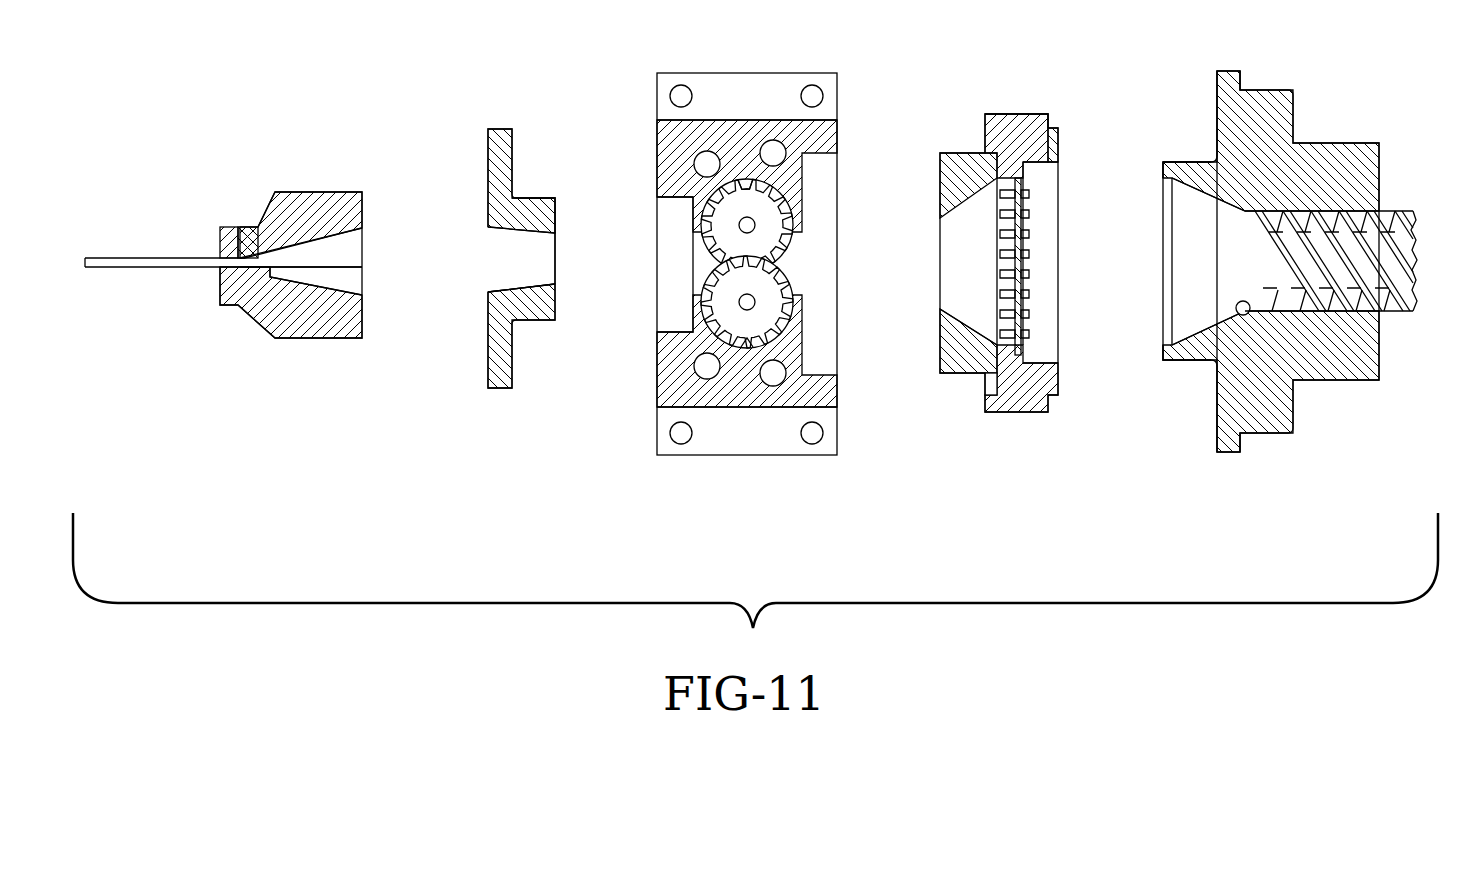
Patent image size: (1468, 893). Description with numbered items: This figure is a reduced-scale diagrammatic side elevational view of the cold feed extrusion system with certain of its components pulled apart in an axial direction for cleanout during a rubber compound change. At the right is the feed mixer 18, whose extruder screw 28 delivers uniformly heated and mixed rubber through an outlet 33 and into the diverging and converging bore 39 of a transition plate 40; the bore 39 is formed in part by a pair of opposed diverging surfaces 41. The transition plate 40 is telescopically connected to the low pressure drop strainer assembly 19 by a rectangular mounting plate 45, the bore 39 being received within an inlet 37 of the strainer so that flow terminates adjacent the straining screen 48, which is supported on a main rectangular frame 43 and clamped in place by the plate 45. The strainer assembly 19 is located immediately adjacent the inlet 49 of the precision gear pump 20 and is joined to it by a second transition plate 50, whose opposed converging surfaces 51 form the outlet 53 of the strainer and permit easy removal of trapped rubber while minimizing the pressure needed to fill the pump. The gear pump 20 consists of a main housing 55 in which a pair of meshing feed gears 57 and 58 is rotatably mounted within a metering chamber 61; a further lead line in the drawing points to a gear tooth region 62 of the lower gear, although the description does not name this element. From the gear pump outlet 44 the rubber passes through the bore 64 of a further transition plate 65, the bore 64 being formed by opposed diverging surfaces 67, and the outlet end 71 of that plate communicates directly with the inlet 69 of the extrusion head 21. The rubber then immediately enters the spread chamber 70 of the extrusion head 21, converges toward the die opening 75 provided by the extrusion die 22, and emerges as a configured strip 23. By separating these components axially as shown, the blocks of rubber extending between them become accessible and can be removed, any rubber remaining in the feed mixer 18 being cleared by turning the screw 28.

The feed mixer 18 is at (1277, 282).
The low pressure drop strainer assembly 19 is at (1011, 280).
The precision gear pump 20 is at (744, 312).
The extrusion head 21 is at (285, 190).
The extrusion die 22 is at (222, 227).
The strip 23 is at (162, 257).
The extruder screw 28 is at (1401, 232).
The outlet 33 is at (1249, 313).
The inlet 37 is at (1048, 327).
The diverging and converging bore 39 is at (1167, 313).
The transition plate 40 is at (1218, 424).
The diverging surfaces 41 is at (1203, 187).
The main rectangular frame 43 is at (1018, 120).
The gear pump outlet 44 is at (677, 308).
The rectangular mounting plate 45 is at (1058, 138).
The straining screen 48 is at (1026, 205).
The inlet 49 is at (792, 290).
The transition plate 50 is at (967, 159).
The converging surfaces 51 is at (985, 342).
The outlet 53 is at (983, 315).
The main housing 55 is at (665, 397).
The feed gear 57 is at (762, 207).
The feed gear 58 is at (740, 320).
The metering chamber 61 is at (738, 186).
The gear tooth 62 is at (747, 341).
The bore 64 is at (520, 258).
The transition plate 65 is at (524, 196).
The diverging surfaces 67 is at (535, 285).
The inlet 69 is at (363, 247).
The spread chamber 70 is at (332, 275).
The outlet end 71 is at (488, 265).
The die opening 75 is at (217, 261).